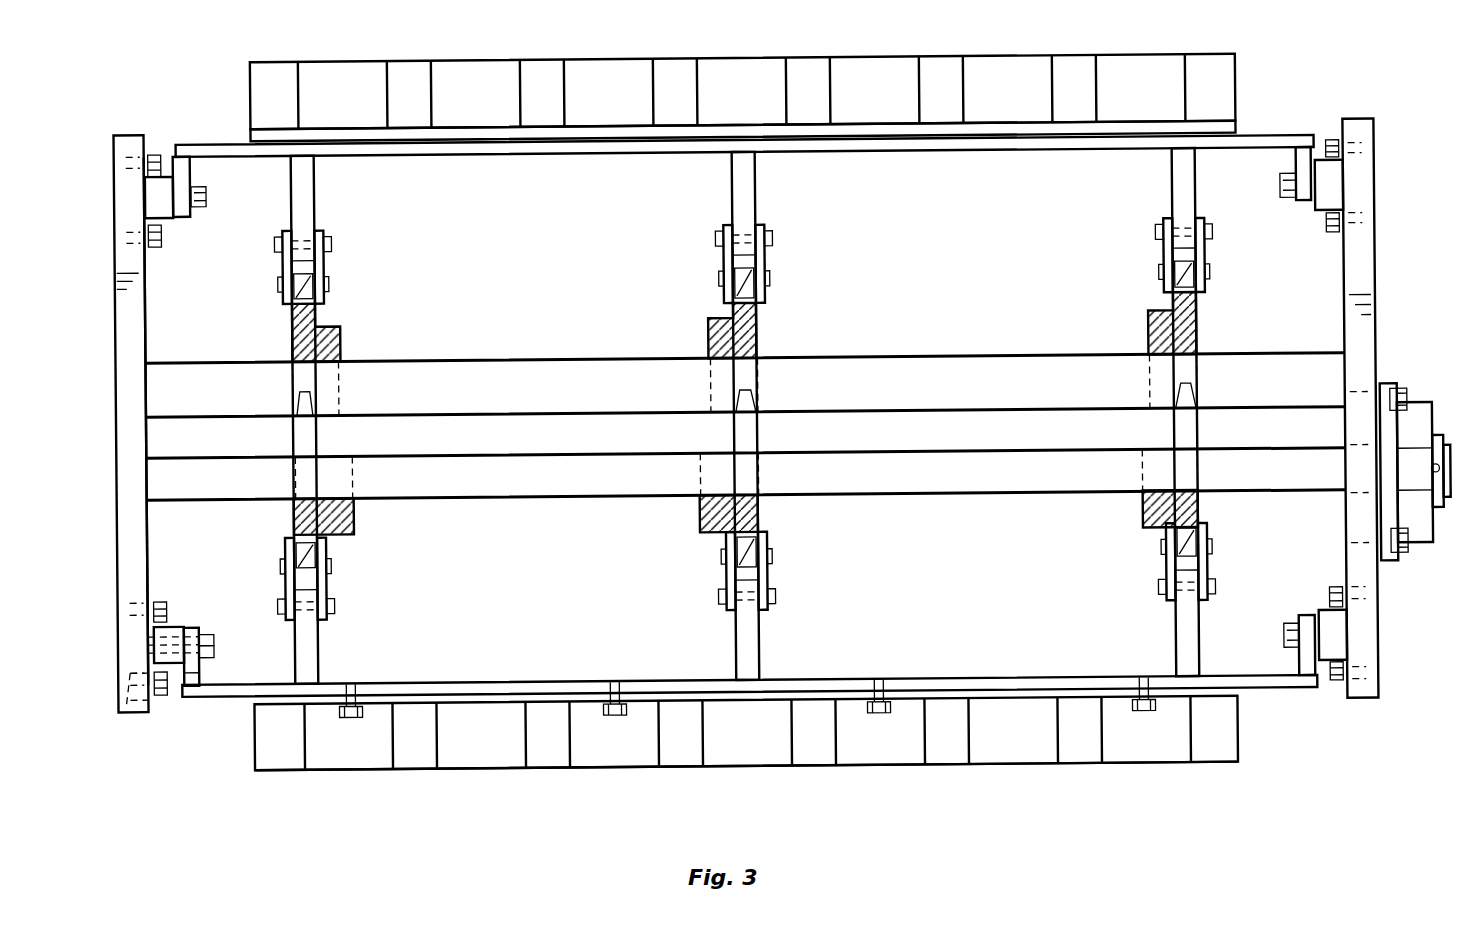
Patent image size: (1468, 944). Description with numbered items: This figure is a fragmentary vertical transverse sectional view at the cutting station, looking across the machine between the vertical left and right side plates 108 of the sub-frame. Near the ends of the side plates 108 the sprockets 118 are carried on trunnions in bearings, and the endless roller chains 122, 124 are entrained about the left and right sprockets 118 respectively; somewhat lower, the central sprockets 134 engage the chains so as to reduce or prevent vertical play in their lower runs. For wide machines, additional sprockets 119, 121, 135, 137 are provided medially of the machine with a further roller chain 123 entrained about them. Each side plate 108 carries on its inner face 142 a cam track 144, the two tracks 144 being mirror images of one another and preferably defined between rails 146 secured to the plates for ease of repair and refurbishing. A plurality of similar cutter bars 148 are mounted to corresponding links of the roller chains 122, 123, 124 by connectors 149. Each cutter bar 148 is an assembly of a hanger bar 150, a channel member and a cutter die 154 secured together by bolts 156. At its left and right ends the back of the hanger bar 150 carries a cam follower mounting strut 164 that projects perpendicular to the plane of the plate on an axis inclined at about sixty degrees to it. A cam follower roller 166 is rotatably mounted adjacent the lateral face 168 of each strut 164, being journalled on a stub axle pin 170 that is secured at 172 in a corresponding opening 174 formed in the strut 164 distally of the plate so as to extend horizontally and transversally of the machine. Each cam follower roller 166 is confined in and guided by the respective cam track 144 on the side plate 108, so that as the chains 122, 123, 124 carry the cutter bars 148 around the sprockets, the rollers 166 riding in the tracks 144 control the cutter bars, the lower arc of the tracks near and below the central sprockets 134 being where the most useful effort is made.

The side plate 108 is at (133, 312).
The sprocket 118 is at (332, 334).
The additional sprocket 119 is at (811, 329).
The additional sprocket 121 is at (760, 333).
The roller chain 122 is at (1208, 244).
The roller chain 123 is at (750, 284).
The roller chain 124 is at (318, 283).
The sprocket 134 is at (353, 522).
The additional sprocket 135 is at (793, 518).
The additional sprocket 137 is at (760, 520).
The inner face 142 is at (148, 543).
The cam track 144 is at (147, 190).
The rail 146 is at (178, 160).
The cutter bar 148 is at (296, 46).
The connector 149 is at (330, 258).
The hanger bar 150 is at (560, 680).
The cutter die 154 is at (258, 766).
The bolt 156 is at (349, 714).
The cam follower mounting strut 164 is at (212, 636).
The cam follower roller 166 is at (160, 642).
The lateral face 168 is at (186, 686).
The stub axle pin 170 is at (198, 683).
The securement 172 is at (208, 648).
The opening 174 is at (124, 712).